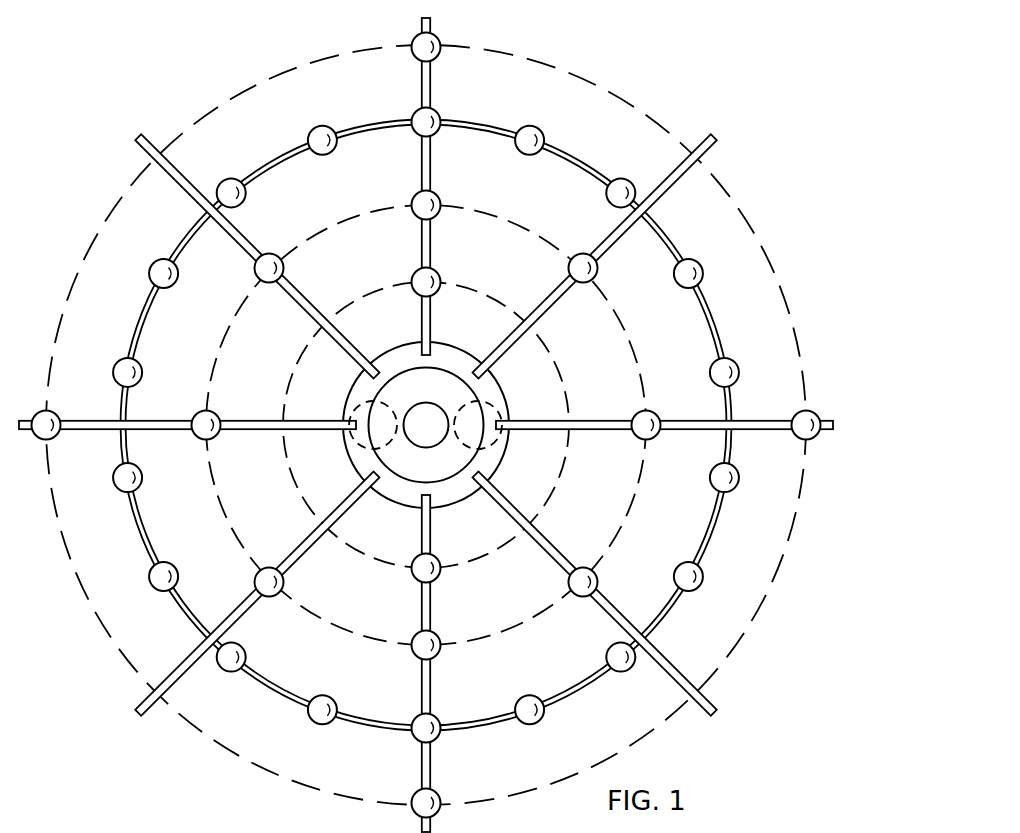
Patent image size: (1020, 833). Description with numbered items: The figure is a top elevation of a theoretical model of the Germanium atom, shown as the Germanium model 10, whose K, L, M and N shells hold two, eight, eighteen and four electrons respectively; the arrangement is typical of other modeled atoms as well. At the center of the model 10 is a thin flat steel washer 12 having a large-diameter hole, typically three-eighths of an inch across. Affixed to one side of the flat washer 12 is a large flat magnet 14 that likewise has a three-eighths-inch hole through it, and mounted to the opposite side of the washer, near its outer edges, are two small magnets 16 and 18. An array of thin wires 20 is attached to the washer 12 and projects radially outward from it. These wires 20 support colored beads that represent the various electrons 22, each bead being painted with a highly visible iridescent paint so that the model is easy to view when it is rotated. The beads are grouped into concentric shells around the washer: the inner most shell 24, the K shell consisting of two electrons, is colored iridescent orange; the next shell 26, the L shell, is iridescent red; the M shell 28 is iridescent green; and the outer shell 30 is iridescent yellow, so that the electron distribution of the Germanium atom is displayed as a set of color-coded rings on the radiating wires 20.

The Germanium model 10 is at (426, 425).
The flat steel washer 12 is at (498, 385).
The large flat magnet 14 is at (445, 372).
The small magnet 16 is at (357, 402).
The small magnet 18 is at (500, 442).
The thin wires 20 is at (430, 608).
The electrons 22 is at (308, 717).
The inner most shell 24 is at (411, 425).
The next shell 26 is at (409, 425).
The M shell 28 is at (138, 530).
The N shell 30 is at (127, 667).